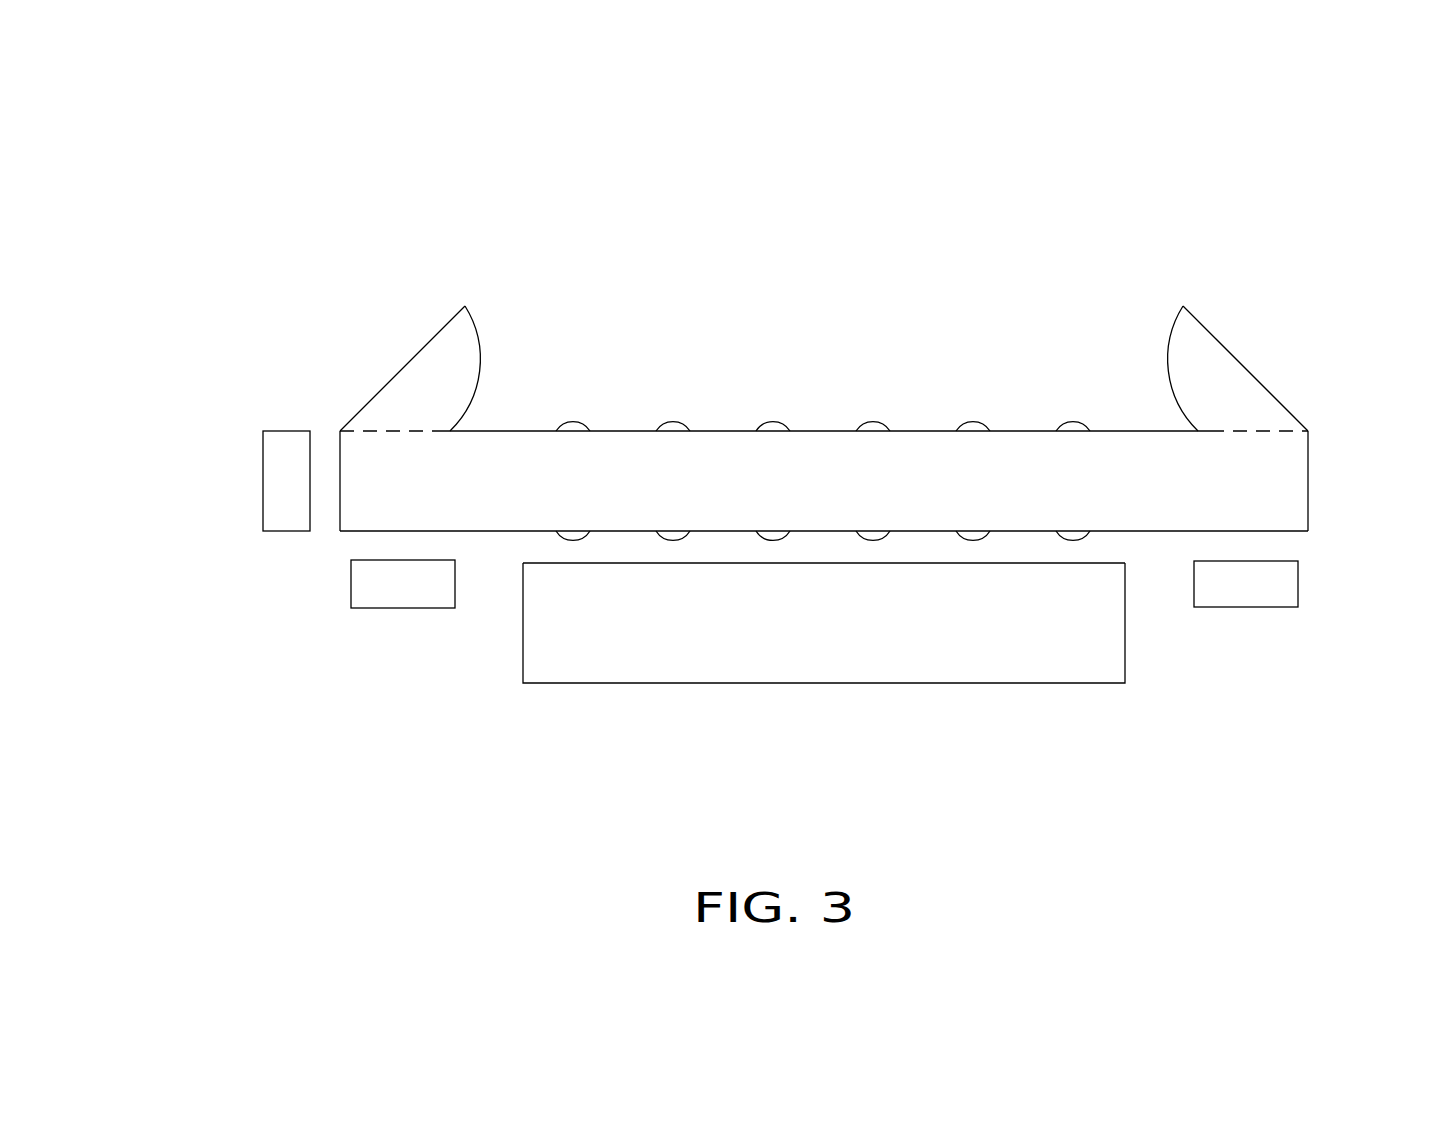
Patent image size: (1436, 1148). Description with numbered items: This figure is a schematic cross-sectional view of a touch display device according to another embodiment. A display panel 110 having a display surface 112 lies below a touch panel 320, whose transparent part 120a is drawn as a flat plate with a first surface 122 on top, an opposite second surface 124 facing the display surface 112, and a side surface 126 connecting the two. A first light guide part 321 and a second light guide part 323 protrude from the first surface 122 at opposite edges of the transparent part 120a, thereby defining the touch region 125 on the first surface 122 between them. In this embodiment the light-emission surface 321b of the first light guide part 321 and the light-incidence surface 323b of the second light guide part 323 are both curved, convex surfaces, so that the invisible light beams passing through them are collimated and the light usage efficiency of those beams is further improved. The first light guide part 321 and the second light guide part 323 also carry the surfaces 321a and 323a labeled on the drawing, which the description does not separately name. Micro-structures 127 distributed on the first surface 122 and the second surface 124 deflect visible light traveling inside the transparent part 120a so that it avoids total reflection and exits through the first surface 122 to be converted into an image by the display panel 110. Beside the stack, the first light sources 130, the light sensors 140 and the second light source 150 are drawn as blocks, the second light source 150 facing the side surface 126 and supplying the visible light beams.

The display panel 110 is at (598, 683).
The display surface 112 is at (1103, 547).
The transparent part 120a is at (768, 438).
The first surface 122 is at (932, 430).
The second surface 124 is at (1047, 531).
The touch region 125 is at (865, 303).
The side surface 126 is at (338, 522).
The micro-structures 127 is at (673, 428).
The first light sources 130 is at (383, 608).
The light sensors 140 is at (1298, 584).
The second light source 150 is at (263, 481).
The touch panel 320 is at (317, 208).
The first light guide part 321 is at (450, 330).
The first inclined surface 321a is at (428, 367).
The light-emission surface 321b is at (480, 387).
The second light guide part 323 is at (1197, 330).
The second inclined surface 323a is at (1222, 366).
The light-incidence surface 323b is at (1170, 390).